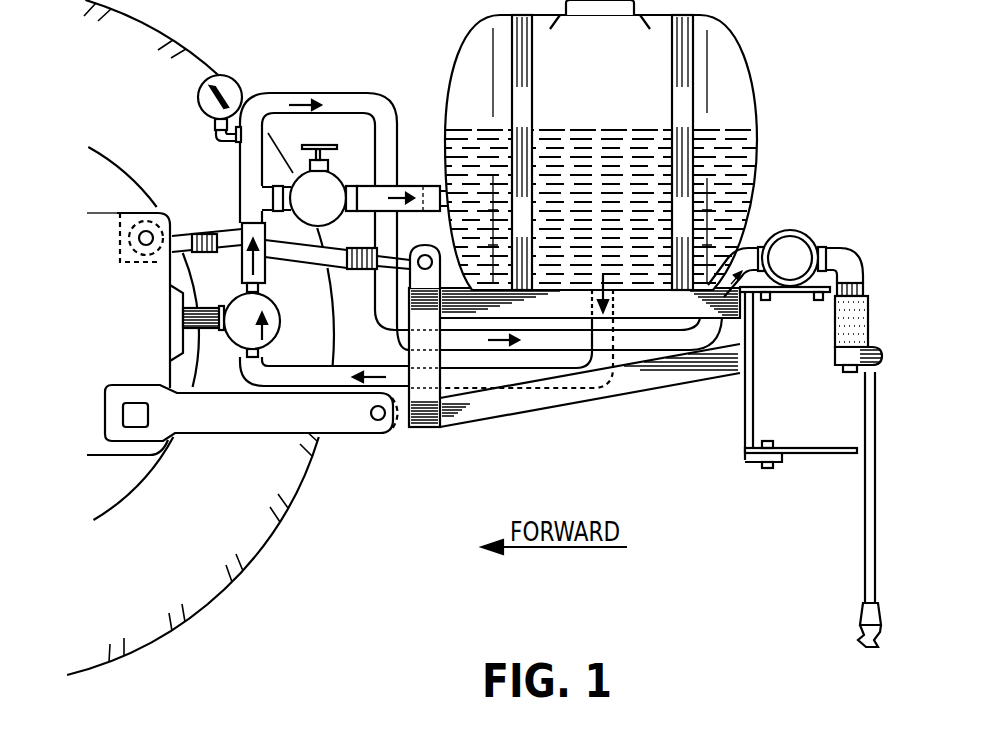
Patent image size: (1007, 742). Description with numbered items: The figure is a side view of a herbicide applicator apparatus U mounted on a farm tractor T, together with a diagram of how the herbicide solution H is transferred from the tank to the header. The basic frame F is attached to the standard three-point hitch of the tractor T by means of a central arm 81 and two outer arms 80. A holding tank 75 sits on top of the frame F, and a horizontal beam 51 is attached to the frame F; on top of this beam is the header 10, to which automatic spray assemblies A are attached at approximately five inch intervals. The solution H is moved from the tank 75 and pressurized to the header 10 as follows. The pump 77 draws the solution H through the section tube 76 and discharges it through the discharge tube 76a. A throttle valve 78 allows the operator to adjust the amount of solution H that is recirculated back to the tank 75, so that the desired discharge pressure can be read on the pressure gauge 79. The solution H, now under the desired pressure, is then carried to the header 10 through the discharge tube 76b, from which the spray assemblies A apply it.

The header 10 is at (811, 415).
The horizontal beam 51 is at (745, 449).
The holding tank 75 is at (626, 145).
The section tube 76 is at (337, 367).
The discharge tube 76a is at (266, 283).
The discharge tube 76b is at (320, 93).
The pump 77 is at (280, 333).
The throttle valve 78 is at (322, 146).
The pressure gauge 79 is at (224, 75).
The outer arms 80 is at (333, 435).
The central arm 81 is at (208, 233).
The herbicide solution H is at (717, 128).
The tractor T is at (247, 567).
The frame F is at (467, 427).
The automatic spray assemblies A is at (876, 297).
The herbicide applicator apparatus U is at (411, 58).